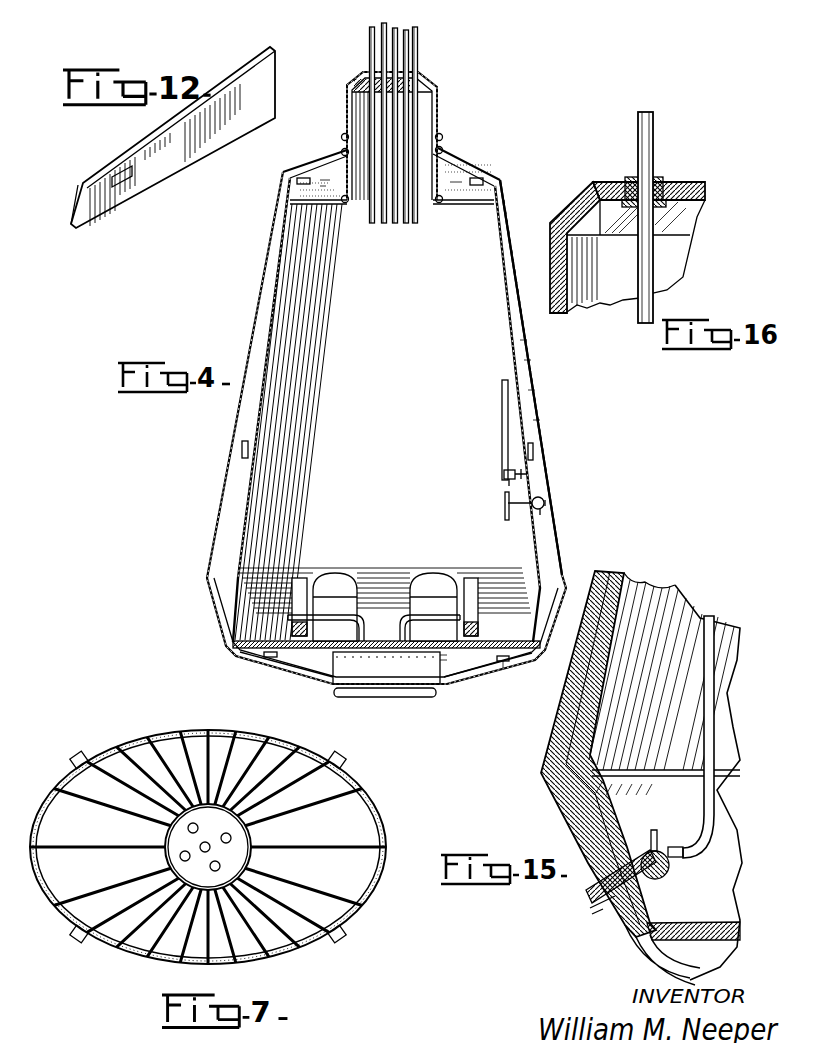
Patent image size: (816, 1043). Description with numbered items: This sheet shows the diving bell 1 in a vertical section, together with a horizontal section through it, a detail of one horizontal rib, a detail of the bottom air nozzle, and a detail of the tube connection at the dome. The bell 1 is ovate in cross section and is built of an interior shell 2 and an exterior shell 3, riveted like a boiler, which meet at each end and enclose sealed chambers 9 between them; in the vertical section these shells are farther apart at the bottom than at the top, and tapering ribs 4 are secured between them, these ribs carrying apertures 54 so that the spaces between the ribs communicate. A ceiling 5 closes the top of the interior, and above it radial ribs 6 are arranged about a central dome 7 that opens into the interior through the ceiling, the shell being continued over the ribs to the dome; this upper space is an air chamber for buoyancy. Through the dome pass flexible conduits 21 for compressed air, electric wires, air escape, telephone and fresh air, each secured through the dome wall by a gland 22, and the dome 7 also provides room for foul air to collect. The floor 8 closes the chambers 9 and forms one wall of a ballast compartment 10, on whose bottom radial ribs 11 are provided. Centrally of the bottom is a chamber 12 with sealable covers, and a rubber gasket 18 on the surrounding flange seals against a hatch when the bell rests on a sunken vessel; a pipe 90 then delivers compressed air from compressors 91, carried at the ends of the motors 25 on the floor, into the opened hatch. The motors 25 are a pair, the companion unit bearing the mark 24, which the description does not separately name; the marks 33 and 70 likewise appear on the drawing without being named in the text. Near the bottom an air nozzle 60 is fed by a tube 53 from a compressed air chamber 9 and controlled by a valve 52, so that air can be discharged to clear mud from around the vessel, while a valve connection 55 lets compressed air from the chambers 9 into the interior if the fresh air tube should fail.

In FIG. 4, the bell 1 is at (386, 428).
In FIG. 15, the bell 1 is at (697, 782).
In FIG. 4, the interior shell 2 is at (512, 346).
In FIG. 7, the interior shell 2 is at (121, 942).
In FIG. 15, the interior shell 2 is at (632, 600).
In FIG. 4, the exterior shell 3 is at (531, 347).
In FIG. 7, the exterior shell 3 is at (98, 924).
In FIG. 15, the exterior shell 3 is at (557, 707).
In FIG. 4, the tapering ribs 4 is at (536, 410).
In FIG. 4, the ceiling 5 is at (467, 203).
In FIG. 4, the radial ribs 6 is at (458, 170).
In FIG. 7, the radial ribs 6 is at (322, 852).
In FIG. 12, the radial ribs 6 is at (154, 172).
In FIG. 4, the central dome 7 is at (438, 105).
In FIG. 12, the central dome 7 is at (270, 181).
In FIG. 16, the central dome 7 is at (703, 182).
In FIG. 4, the floor 8 is at (246, 656).
In FIG. 15, the floor 8 is at (702, 923).
In FIG. 4, the chambers 9 is at (548, 523).
In FIG. 4, the ballast compartment 10 is at (300, 660).
In FIG. 4, the radial ribs 11 is at (465, 665).
In FIG. 4, the chamber 12 is at (393, 672).
In FIG. 4, the rubber gasket 18 is at (348, 696).
In FIG. 4, the flexible conduits 21 is at (419, 48).
In FIG. 16, the flexible conduits 21 is at (654, 125).
In FIG. 16, the gland 22 is at (666, 179).
In FIG. 4, the left burner 24 is at (334, 572).
In FIG. 4, the motors 25 is at (430, 572).
In FIG. 4, the bottom slot 33 is at (501, 669).
In FIG. 15, the valve 52 is at (671, 877).
In FIG. 4, the tube 53 is at (505, 450).
In FIG. 15, the tube 53 is at (693, 708).
In FIG. 4, the apertures 54 is at (534, 451).
In FIG. 4, the valve connection 55 is at (503, 475).
In FIG. 15, the air nozzle 60 is at (597, 906).
In FIG. 15, the bottom curved strip 70 is at (657, 960).
In FIG. 4, the pipe 90 is at (400, 625).
In FIG. 4, the compressors 91 is at (309, 578).